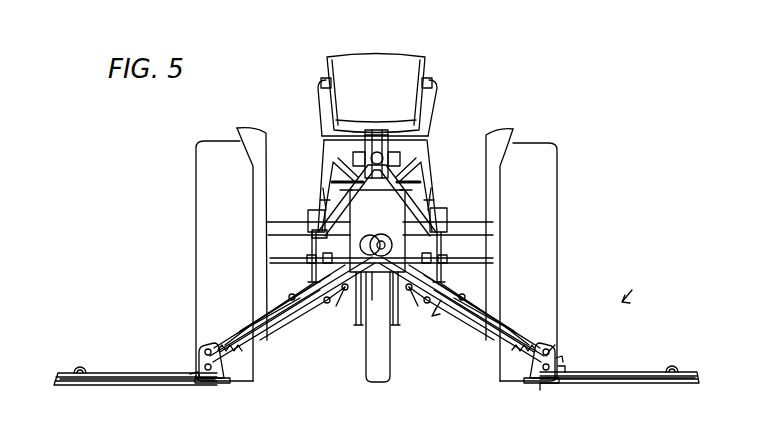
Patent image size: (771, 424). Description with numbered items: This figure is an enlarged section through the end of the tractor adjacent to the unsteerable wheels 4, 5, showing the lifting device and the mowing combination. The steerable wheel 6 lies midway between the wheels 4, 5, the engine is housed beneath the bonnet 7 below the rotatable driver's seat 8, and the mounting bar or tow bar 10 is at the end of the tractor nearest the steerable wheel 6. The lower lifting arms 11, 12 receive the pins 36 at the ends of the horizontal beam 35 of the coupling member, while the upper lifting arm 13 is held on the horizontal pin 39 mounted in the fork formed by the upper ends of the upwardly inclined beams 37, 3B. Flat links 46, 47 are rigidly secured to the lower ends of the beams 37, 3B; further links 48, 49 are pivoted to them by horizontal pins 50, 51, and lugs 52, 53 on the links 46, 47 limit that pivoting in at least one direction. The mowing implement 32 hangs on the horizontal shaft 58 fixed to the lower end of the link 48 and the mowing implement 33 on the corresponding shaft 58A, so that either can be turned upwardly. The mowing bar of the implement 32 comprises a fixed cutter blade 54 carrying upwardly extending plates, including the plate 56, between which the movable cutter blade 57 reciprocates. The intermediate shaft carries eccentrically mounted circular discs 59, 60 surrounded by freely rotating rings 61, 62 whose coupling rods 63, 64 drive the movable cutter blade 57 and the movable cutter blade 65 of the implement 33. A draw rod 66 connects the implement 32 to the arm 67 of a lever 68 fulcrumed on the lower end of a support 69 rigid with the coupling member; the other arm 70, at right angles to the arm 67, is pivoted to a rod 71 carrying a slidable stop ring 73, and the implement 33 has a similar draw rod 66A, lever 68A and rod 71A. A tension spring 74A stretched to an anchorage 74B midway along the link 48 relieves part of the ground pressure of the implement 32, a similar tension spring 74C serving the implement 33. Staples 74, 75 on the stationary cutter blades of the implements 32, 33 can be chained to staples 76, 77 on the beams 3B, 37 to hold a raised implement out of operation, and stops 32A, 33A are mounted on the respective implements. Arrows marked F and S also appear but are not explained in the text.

The unsteerable wheel 4 is at (200, 181).
The unsteerable wheel 5 is at (557, 163).
The steerable wheel 6 is at (384, 374).
The bonnet 7 is at (318, 88).
The driver's seat 8 is at (402, 70).
The mounting bar or tow bar 10 is at (307, 214).
The lower lifting arm 11 is at (462, 270).
The lower lifting arm 12 is at (326, 258).
The upper lifting arm 13 is at (373, 130).
The mowing implement 32 is at (645, 370).
The stop 32A is at (560, 360).
The mowing implement 33 is at (114, 370).
The stop 33A is at (196, 358).
The horizontal beam 35 is at (445, 258).
The pin 36 is at (307, 258).
The upwardly inclined beam 37 is at (318, 238).
The upwardly inclined beam 3B is at (442, 232).
The horizontal pin 39 is at (392, 153).
The flat link 46 is at (462, 296).
The flat link 47 is at (308, 284).
The link 48 is at (520, 345).
The link 49 is at (242, 334).
The horizontal pin 50 is at (492, 297).
The horizontal pin 51 is at (288, 298).
The lug 52 is at (487, 311).
The lug 53 is at (262, 318).
The fixed cutter blade 54 is at (542, 384).
The plate 56 is at (567, 366).
The movable cutter blade 57 is at (618, 370).
The horizontal shaft 58 is at (556, 384).
The shaft 58A is at (208, 383).
The eccentrically mounted circular disc 59 is at (383, 238).
The eccentrically mounted circular disc 60 is at (366, 240).
The ring 61 is at (377, 298).
The ring 62 is at (336, 304).
The coupling rod 63 is at (500, 358).
The coupling rod 64 is at (270, 331).
The movable cutter blade 65 is at (136, 370).
The draw rod 66 is at (504, 332).
The draw rod 66A is at (300, 332).
The arm 67 is at (450, 284).
The lever 68 is at (432, 331).
The lever 68A is at (325, 331).
The support 69 is at (419, 305).
The arm 70 is at (381, 286).
The rod 71 is at (432, 200).
The rod 71A is at (322, 200).
The ring 73 is at (400, 216).
The staple 74 is at (680, 366).
The tension spring 74A is at (548, 350).
The anchorage 74B is at (556, 340).
The tension spring 74C is at (212, 344).
The staple 75 is at (78, 368).
The staple 76 is at (420, 190).
The staple 77 is at (330, 188).
The force direction F is at (439, 312).
The direction arrow S is at (633, 297).